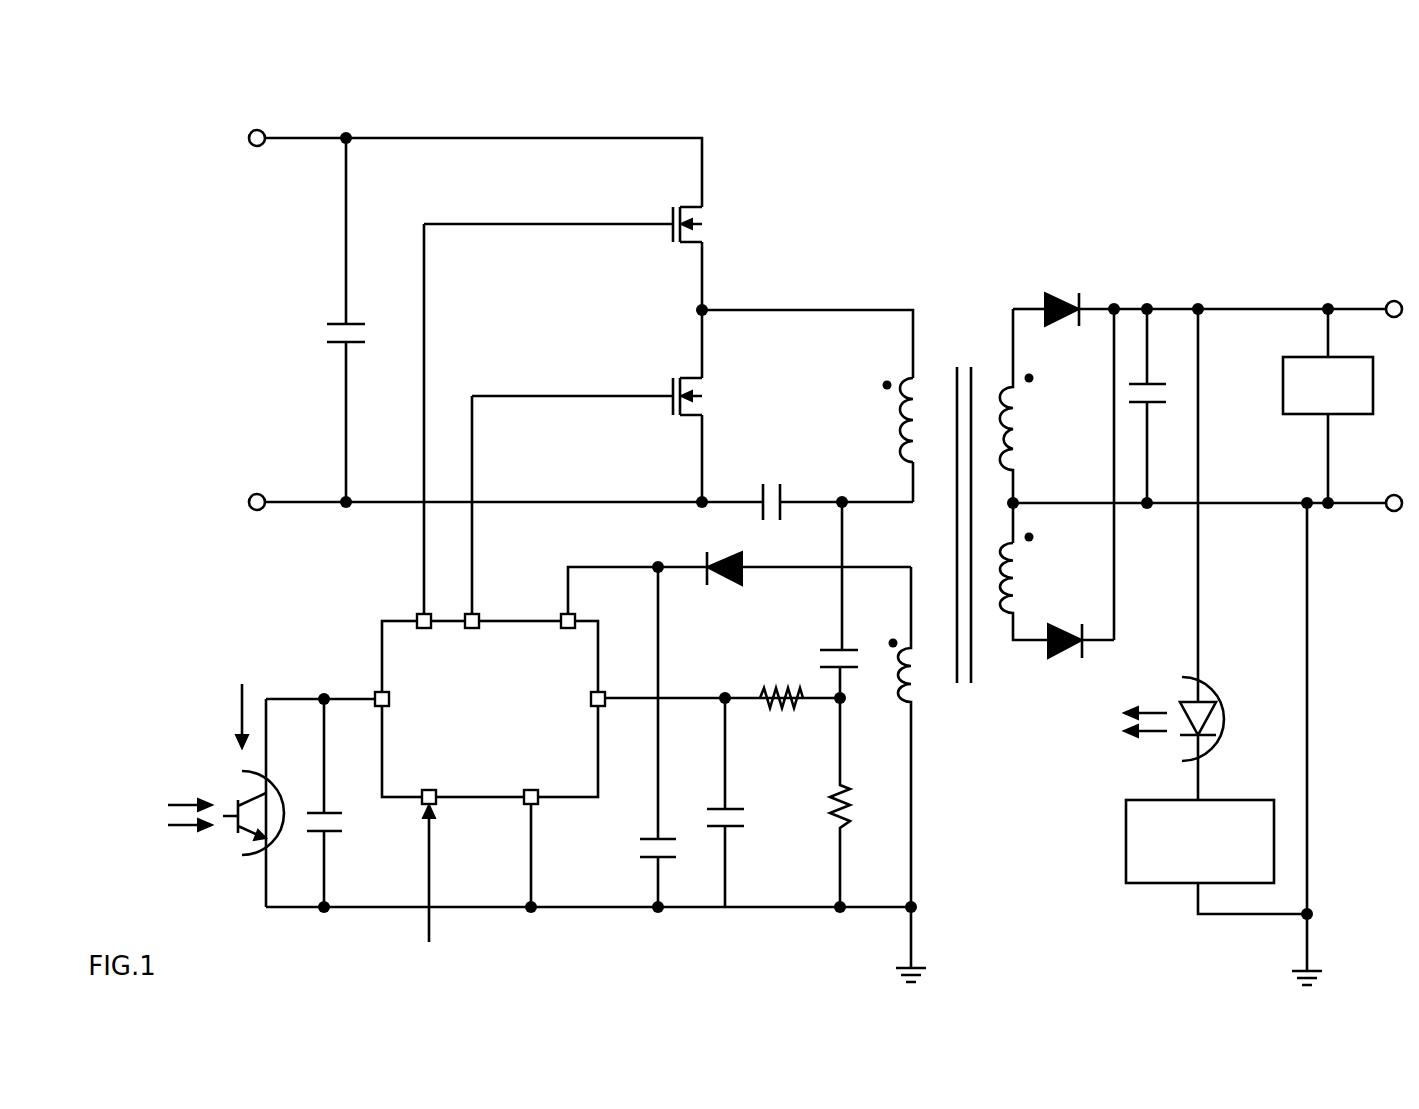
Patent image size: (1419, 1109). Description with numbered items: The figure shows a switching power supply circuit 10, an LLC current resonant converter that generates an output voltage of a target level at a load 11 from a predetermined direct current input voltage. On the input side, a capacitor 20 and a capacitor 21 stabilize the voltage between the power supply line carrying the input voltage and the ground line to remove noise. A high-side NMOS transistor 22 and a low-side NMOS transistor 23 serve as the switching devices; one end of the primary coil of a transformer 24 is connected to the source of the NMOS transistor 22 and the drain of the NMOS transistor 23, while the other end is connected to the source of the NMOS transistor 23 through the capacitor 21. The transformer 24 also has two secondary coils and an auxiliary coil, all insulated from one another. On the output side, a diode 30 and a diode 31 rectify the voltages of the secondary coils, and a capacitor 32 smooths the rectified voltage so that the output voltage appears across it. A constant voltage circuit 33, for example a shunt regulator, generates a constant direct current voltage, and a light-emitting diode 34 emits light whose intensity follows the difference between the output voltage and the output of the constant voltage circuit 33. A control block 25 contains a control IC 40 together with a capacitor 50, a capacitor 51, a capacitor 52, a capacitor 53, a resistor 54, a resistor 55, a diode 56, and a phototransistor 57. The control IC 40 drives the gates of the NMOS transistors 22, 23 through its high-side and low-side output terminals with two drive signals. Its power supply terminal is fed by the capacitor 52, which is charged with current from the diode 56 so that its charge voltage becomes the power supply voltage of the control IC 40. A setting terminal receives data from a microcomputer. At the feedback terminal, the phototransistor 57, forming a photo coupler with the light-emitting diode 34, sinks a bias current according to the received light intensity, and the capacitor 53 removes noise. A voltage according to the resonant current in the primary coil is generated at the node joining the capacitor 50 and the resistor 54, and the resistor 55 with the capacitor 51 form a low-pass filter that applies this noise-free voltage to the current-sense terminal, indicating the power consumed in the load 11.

The switching power supply circuit 10 is at (1128, 137).
The load 11 is at (1374, 388).
The capacitor 20 is at (353, 323).
The capacitor 21 is at (781, 484).
The NMOS transistor 22 is at (672, 244).
The NMOS transistor 23 is at (672, 420).
The transformer 24 is at (963, 365).
The control block 25 is at (270, 596).
The diode 30 is at (1047, 293).
The diode 31 is at (1050, 656).
The capacitor 32 is at (1153, 404).
The constant voltage circuit 33 is at (1250, 800).
The light-emitting diode 34 is at (1210, 690).
The control IC 40 is at (382, 621).
The capacitor 50 is at (845, 650).
The capacitor 51 is at (740, 809).
The capacitor 52 is at (644, 858).
The capacitor 53 is at (341, 834).
The resistor 54 is at (835, 822).
The resistor 55 is at (771, 690).
The diode 56 is at (738, 590).
The phototransistor 57 is at (250, 852).